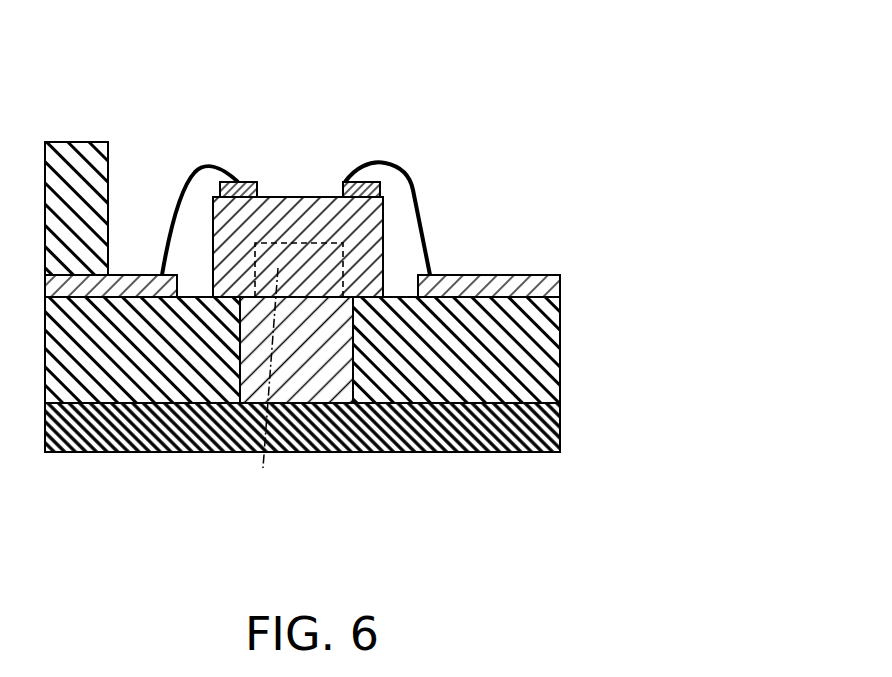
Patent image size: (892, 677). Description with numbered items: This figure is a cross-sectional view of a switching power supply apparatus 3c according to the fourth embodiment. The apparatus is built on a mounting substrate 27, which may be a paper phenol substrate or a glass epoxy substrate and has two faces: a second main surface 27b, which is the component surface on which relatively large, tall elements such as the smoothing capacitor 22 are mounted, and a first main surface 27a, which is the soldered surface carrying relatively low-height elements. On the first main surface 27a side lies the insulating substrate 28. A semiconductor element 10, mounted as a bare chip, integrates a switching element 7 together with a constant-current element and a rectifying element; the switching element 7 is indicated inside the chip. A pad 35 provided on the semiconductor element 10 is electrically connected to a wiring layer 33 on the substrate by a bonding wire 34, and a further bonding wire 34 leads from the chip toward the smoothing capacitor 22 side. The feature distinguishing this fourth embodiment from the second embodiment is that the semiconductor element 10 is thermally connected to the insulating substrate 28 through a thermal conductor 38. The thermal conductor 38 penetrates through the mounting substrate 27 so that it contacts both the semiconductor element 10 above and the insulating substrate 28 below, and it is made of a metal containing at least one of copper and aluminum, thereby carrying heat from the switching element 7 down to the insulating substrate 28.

The switching power supply apparatus 3c is at (642, 82).
The switching element 7 is at (265, 389).
The semiconductor element 10 is at (308, 213).
The smoothing capacitor 22 is at (70, 158).
The mounting substrate 27 is at (527, 323).
The first main surface 27a is at (500, 403).
The second main surface 27b is at (500, 297).
The insulating substrate 28 is at (537, 428).
The wiring layer 33 is at (538, 287).
The bonding wire 34 is at (218, 165).
The pad 35 is at (345, 182).
The thermal conductor 38 is at (307, 357).